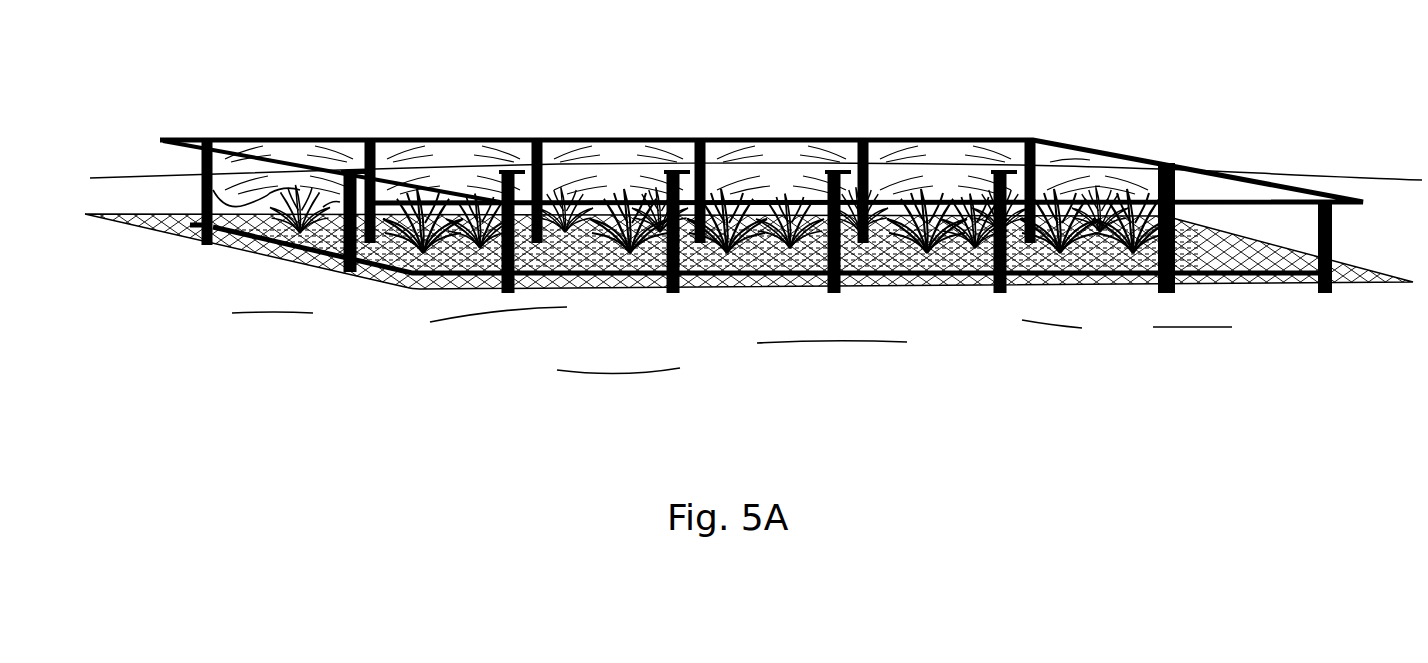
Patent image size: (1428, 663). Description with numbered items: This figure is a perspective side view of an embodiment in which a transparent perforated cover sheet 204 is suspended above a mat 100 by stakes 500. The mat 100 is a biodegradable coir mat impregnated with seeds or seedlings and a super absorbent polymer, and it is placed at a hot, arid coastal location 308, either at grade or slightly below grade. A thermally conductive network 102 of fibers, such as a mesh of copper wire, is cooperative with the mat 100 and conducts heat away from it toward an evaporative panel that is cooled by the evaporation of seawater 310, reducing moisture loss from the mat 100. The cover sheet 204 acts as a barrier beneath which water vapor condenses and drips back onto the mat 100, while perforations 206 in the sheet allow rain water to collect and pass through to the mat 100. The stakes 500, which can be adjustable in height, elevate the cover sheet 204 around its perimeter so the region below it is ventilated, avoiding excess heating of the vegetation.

The mat 100 is at (1235, 275).
The thermally conductive network 102 is at (932, 290).
The perforated cover sheet 204 is at (1092, 148).
The perforations 206 is at (358, 162).
The hot, arid coastal location 308 is at (518, 364).
The seawater 310 is at (203, 189).
The stakes 500 is at (1332, 222).